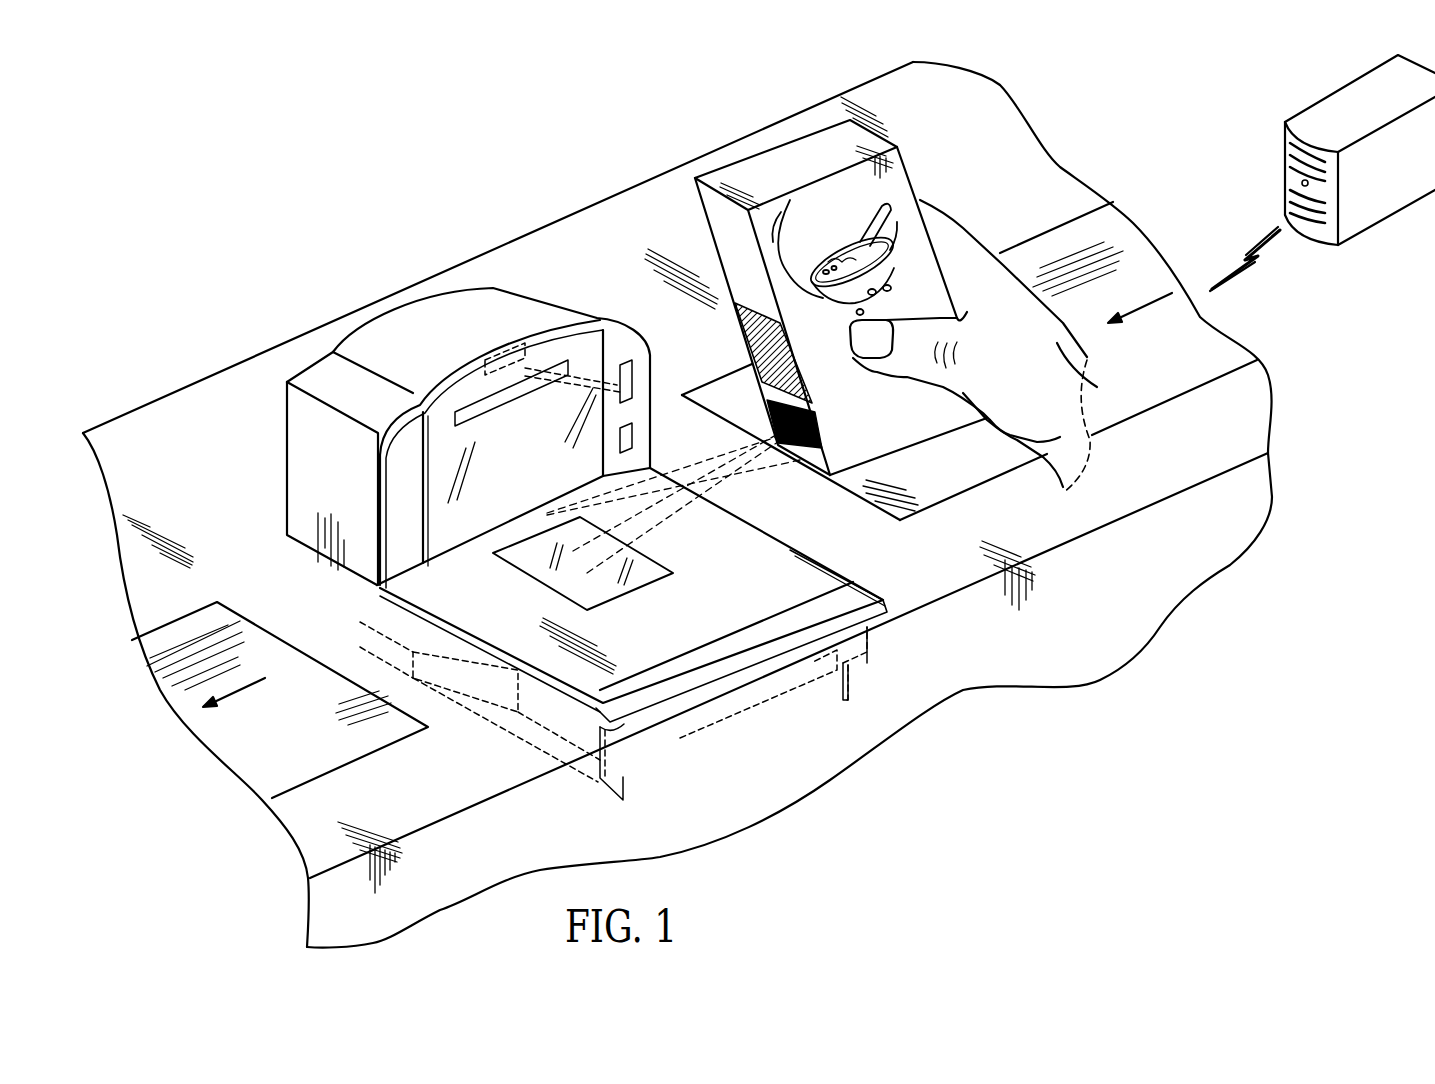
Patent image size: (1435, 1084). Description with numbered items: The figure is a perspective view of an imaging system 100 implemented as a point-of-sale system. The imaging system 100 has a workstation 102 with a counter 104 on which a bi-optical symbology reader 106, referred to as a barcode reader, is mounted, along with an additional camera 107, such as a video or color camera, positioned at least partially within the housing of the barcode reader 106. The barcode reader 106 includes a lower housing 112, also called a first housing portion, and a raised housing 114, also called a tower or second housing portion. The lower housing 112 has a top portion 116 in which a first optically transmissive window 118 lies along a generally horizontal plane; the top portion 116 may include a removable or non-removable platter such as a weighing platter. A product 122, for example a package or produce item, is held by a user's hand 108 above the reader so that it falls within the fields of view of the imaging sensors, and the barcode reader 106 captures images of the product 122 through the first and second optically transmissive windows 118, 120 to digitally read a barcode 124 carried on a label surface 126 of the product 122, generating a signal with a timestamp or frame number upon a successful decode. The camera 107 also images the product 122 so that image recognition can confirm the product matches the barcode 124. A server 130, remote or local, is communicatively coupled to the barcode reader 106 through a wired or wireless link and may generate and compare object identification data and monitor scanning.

The imaging system 100 is at (183, 333).
The workstation 102 is at (570, 204).
The counter 104 is at (1000, 137).
The bi-optical symbology reader 106 is at (298, 467).
The camera 107 is at (497, 360).
The user hand 108 is at (1085, 372).
The lower housing 112 is at (592, 790).
The raised housing 114 is at (549, 551).
The top portion 116 is at (577, 672).
The first optically transmissive window 118 is at (630, 585).
The second optically transmissive window 120 is at (447, 390).
The product 122 is at (840, 297).
The barcode 124 is at (818, 432).
The label / side surface 126 is at (738, 326).
The server 130 is at (1282, 168).